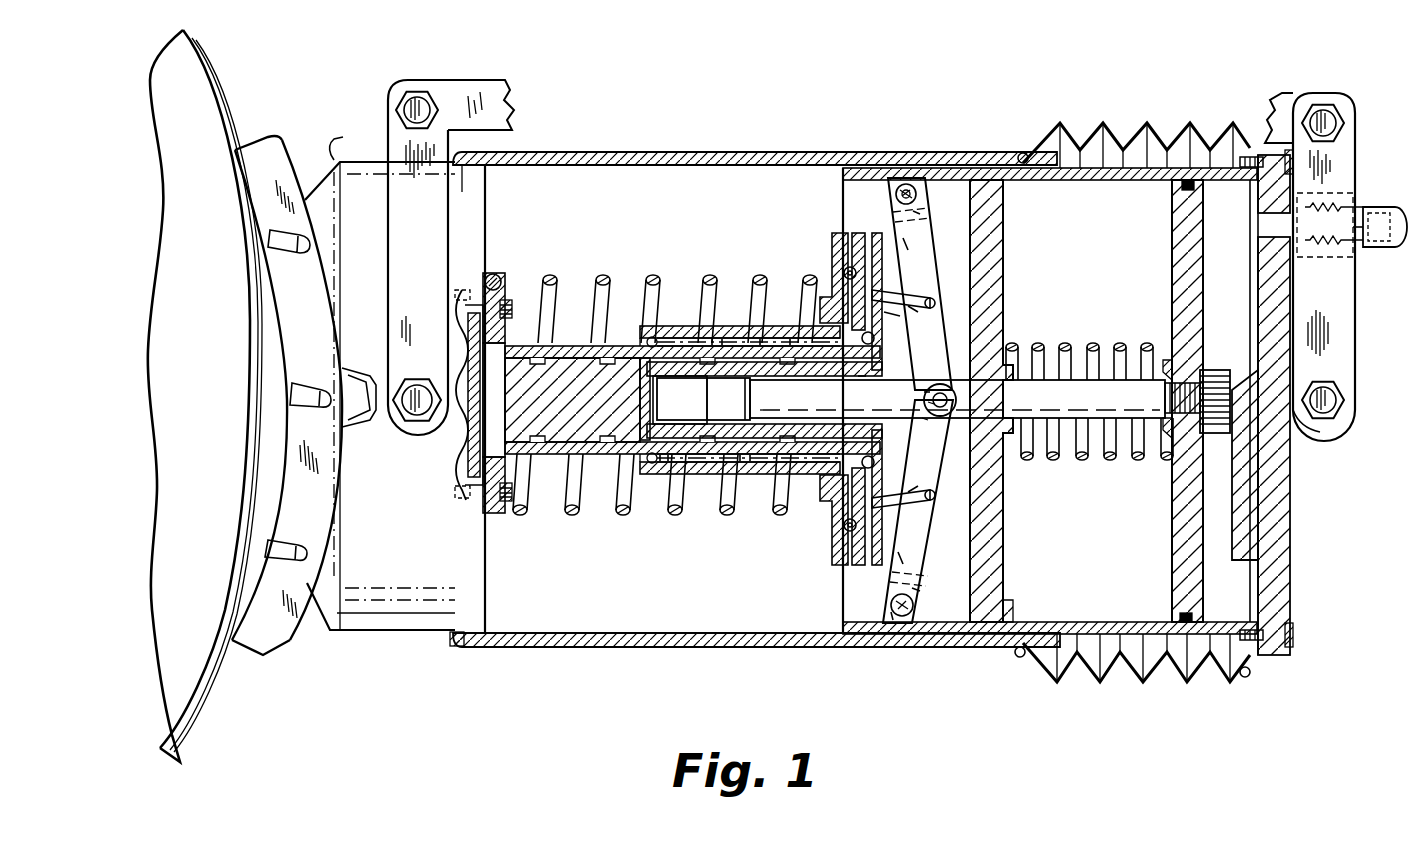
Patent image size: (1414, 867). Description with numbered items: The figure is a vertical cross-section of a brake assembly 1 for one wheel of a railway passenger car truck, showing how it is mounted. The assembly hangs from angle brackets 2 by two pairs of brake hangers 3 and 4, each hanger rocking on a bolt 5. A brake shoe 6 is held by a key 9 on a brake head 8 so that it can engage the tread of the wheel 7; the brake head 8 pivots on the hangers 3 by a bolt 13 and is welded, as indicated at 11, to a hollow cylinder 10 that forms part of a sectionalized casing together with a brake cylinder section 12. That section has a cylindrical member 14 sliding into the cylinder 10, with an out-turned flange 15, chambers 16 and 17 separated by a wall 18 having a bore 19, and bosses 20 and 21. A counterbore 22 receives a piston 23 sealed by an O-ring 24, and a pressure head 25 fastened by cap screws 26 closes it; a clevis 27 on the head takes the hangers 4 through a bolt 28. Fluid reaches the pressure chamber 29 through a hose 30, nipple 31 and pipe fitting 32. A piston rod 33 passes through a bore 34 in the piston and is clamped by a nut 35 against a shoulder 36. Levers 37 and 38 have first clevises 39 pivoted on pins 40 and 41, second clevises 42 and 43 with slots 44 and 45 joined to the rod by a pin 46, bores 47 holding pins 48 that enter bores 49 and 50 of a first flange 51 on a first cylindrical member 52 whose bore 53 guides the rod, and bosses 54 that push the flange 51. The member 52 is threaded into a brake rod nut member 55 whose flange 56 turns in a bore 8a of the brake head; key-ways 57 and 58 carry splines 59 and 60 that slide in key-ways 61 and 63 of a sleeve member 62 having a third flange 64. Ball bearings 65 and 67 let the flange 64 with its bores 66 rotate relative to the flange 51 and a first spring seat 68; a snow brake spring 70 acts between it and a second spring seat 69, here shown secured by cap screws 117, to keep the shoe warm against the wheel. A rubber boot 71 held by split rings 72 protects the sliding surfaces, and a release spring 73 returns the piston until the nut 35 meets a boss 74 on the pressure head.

The brake assembly 1 is at (756, 383).
The angle brackets 2 is at (498, 86).
The brake hangers 3 is at (398, 147).
The brake hangers 4 is at (1345, 161).
The bolt 5 is at (406, 105).
The brake shoe 6 is at (273, 625).
The wheel 7 is at (190, 686).
The brake head 8 is at (392, 608).
The bottomed bore 8a is at (467, 329).
The key 9 is at (333, 146).
The hollow cylinder 10 is at (632, 153).
The welding 11 is at (452, 641).
The brake cylinder section 12 is at (1092, 659).
The bolt 13 is at (412, 418).
The cylindrical member 14 is at (1110, 625).
The out-turned flange 15 is at (1203, 663).
The annular chamber 16 is at (957, 625).
The chamber 17 is at (1018, 603).
The wall 18 is at (990, 539).
The bore 19 is at (995, 422).
The boss 20 is at (903, 184).
The boss 21 is at (893, 622).
The counterbore 22 is at (1240, 618).
The brake-applying piston 23 is at (1190, 575).
The O-ring seal 24 is at (1180, 615).
The pressure head 25 is at (1280, 577).
The cap screws 26 is at (1253, 158).
The clevis 27 is at (1300, 429).
The bolt 28 is at (1346, 404).
The pressure chamber 29 is at (1235, 528).
The hose 30 is at (1399, 213).
The nipple 31 is at (1362, 244).
The pipe fitting 32 is at (1318, 250).
The piston rod 33 is at (718, 390).
The bore 34 is at (1172, 364).
The nut 35 is at (1216, 368).
The shoulder 36 is at (1165, 394).
The lever 37 is at (928, 245).
The lever 38 is at (922, 545).
The first clevis 39 is at (918, 213).
The pin 40 is at (908, 190).
The pin 41 is at (903, 617).
The second clevis 42 is at (957, 397).
The second clevis 43 is at (957, 404).
The elongated slot 44 is at (924, 396).
The elongated slot 45 is at (925, 419).
The pin 46 is at (927, 403).
The bottomed bore 47 is at (931, 300).
The pin 48 is at (913, 311).
The bore 49 is at (896, 316).
The bore 50 is at (832, 482).
The first out-turned flange 51 is at (878, 233).
The first cylindrical member 52 is at (668, 432).
The bottomed bore 53 is at (860, 377).
The projecting boss 54 is at (905, 246).
The brake rod nut member 55 is at (540, 446).
The second out-turned flange 56 is at (468, 467).
The key-way 57 is at (646, 333).
The key-way 58 is at (661, 463).
The spline 59 is at (690, 339).
The spline 60 is at (712, 461).
The key-way 61 is at (718, 337).
The sleeve member 62 is at (778, 336).
The second key-way 63 is at (745, 463).
The third out-turned flange 64 is at (838, 232).
The first set of ball bearings 65 is at (874, 341).
The bores 66 is at (878, 291).
The second set of ball bearings 67 is at (844, 272).
The first annular spring seat 68 is at (851, 242).
The second annular spring seat 69 is at (492, 274).
The snow brake spring 70 is at (601, 276).
The rubber boot 71 is at (1112, 664).
The split metallic ring 72 is at (1020, 657).
The brake release spring 73 is at (1105, 460).
The boss 74 is at (1248, 440).
The cap screws 117 is at (511, 306).